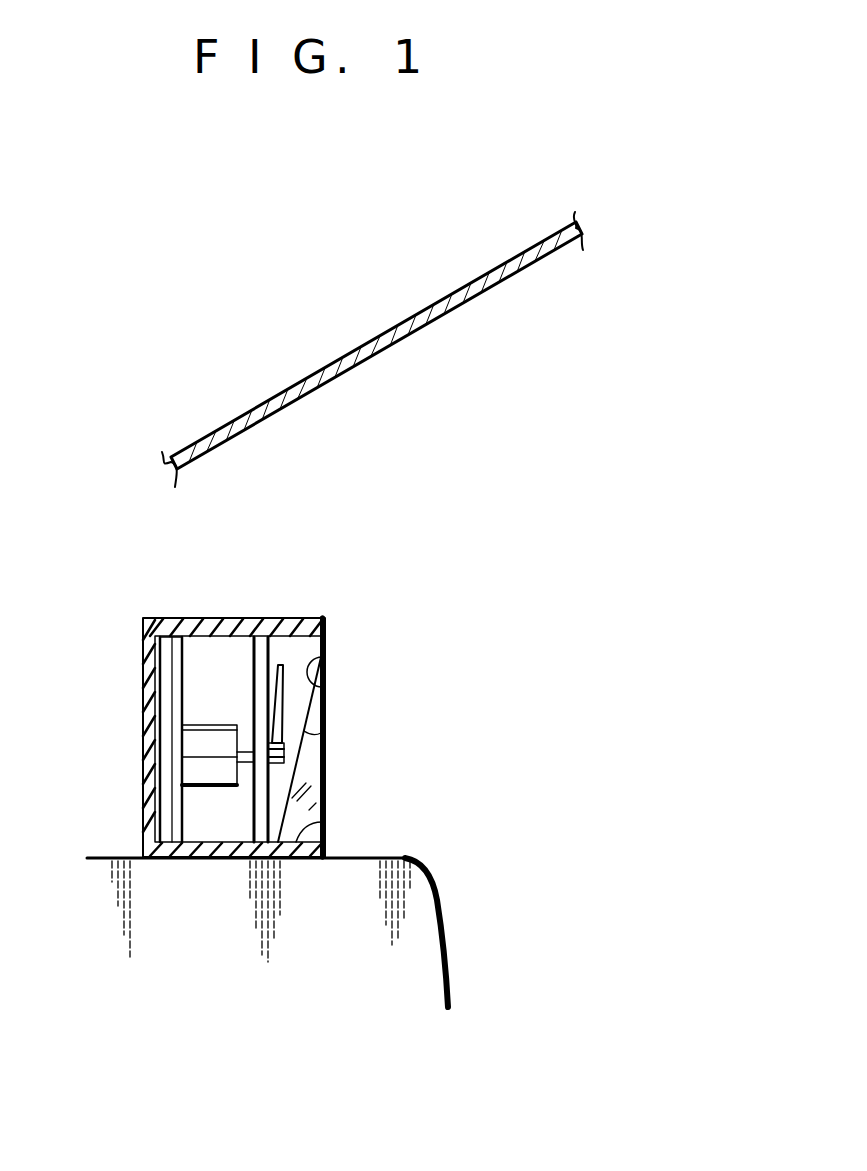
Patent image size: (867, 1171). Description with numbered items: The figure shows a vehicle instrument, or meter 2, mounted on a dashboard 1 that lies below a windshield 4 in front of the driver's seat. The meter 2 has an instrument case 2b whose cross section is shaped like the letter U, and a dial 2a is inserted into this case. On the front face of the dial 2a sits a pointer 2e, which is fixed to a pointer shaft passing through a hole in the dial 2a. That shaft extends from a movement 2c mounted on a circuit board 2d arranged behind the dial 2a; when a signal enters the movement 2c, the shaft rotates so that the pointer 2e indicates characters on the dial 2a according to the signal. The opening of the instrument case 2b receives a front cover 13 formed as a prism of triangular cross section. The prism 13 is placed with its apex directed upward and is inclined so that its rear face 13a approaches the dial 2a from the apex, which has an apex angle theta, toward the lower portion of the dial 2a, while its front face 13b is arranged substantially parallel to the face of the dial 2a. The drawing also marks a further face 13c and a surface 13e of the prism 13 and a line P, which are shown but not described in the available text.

The dashboard 1 is at (440, 920).
The meter 2 is at (241, 585).
The dial 2a is at (260, 652).
The instrument case 2b is at (143, 635).
The movement 2c is at (212, 778).
The circuit board 2d is at (178, 731).
The pointer 2e is at (280, 665).
The windshield 4 is at (397, 322).
The front cover 13 is at (368, 751).
The rear face 13a is at (328, 652).
The front face 13b is at (328, 698).
The sensor lower portion 13c is at (326, 822).
The reflecting surface 13e is at (308, 777).
The optical line P is at (328, 637).